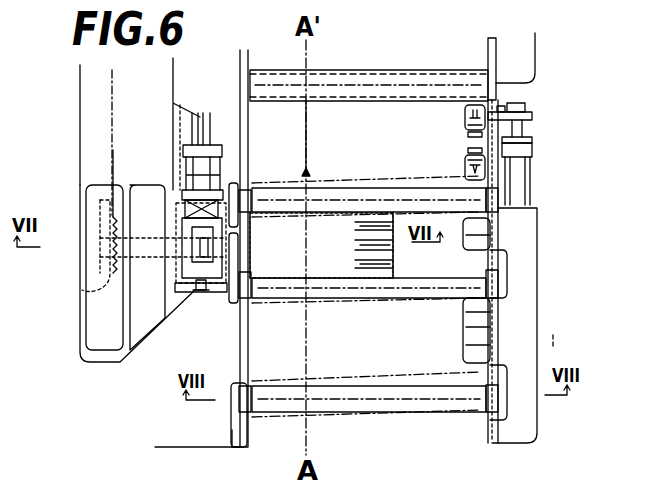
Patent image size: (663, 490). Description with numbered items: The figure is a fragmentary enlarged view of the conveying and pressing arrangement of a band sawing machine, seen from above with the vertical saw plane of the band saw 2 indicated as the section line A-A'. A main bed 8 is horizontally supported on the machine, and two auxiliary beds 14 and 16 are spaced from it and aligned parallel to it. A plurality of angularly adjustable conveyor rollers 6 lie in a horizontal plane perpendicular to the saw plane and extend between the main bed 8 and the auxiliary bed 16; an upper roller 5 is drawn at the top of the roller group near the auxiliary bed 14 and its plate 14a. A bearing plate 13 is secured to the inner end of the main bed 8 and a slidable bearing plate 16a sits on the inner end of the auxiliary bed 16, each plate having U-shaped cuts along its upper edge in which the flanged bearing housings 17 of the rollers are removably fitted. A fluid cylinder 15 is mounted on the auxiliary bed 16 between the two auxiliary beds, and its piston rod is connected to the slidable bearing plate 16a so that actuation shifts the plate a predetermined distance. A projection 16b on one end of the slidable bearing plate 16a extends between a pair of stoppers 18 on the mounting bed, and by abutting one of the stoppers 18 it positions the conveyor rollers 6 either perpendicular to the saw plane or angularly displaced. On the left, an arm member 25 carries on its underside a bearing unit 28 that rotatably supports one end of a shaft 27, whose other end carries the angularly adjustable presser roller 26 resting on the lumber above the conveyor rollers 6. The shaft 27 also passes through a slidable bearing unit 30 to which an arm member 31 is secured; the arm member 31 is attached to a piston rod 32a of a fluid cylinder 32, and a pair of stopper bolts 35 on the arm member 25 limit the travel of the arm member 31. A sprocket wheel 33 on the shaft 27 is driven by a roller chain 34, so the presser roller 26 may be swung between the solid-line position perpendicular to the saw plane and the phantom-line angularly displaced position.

The band saw 2 is at (307, 172).
The upper roller 5 is at (413, 70).
The conveyor rollers 6 is at (401, 188).
The main bed 8 is at (193, 448).
The bearing plate 13 is at (247, 338).
The auxiliary bed 14 is at (536, 70).
The support plate 14a is at (490, 58).
The fluid cylinder 15 is at (533, 150).
The auxiliary bed 16 is at (538, 257).
The slidable bearing plate 16a is at (492, 430).
The projection 16b is at (530, 116).
The flanged bearing housing 17 is at (498, 186).
The stoppers 18 is at (468, 116).
The arm member 25 is at (86, 362).
The presser roller 26 is at (338, 290).
The shaft 27 is at (154, 262).
The bearing unit 28 is at (84, 308).
The bearing unit 30 is at (216, 293).
The arm member 31 is at (198, 242).
The fluid cylinder 32 is at (222, 152).
The piston rod 32a is at (222, 186).
The sprocket wheel 33 is at (100, 268).
The roller chain 34 is at (112, 130).
The stopper bolts 35 is at (184, 174).